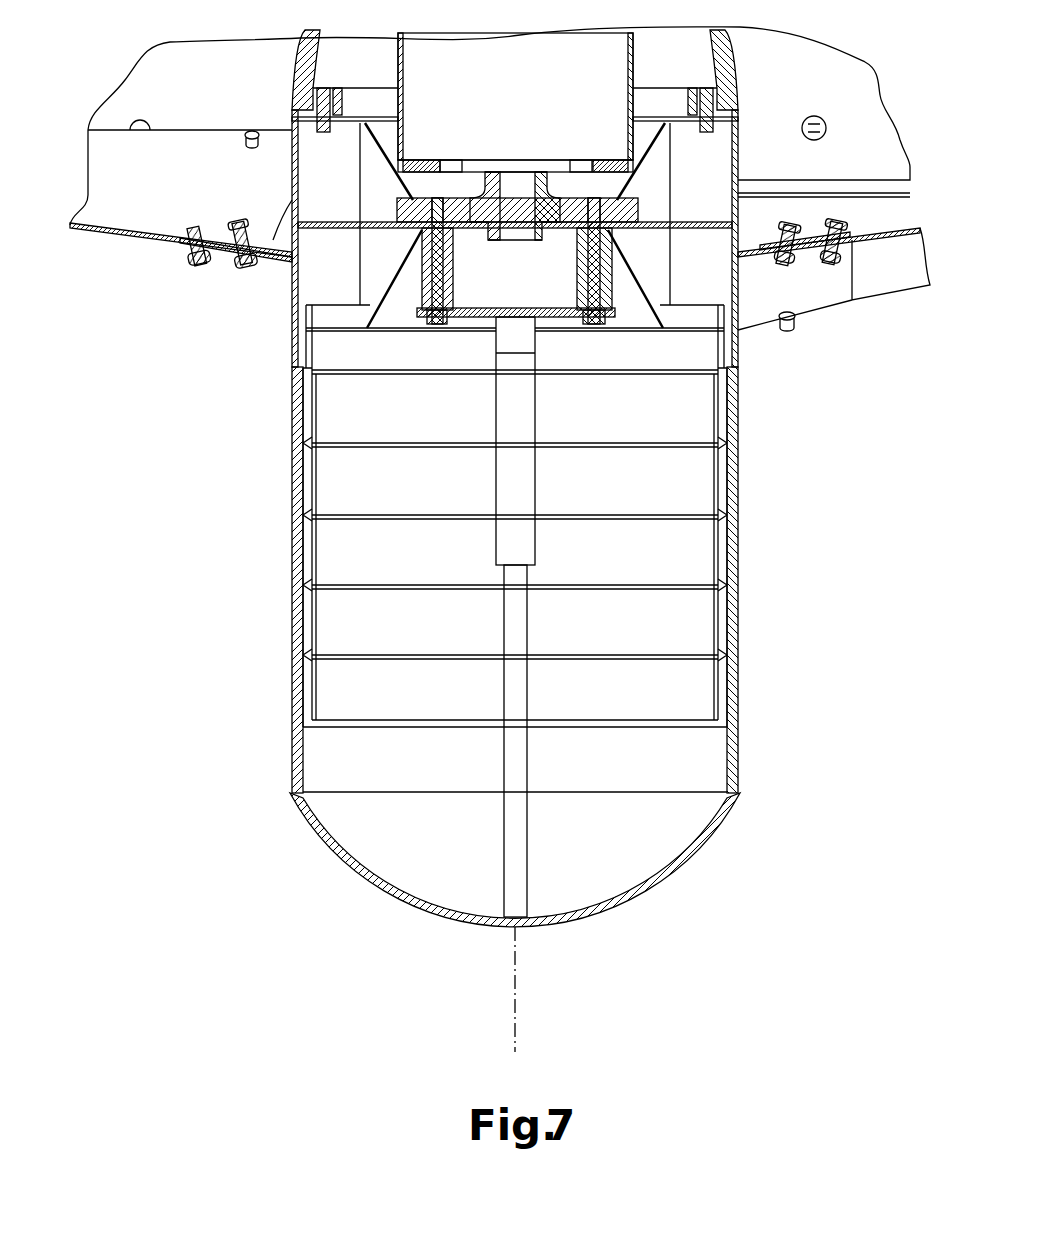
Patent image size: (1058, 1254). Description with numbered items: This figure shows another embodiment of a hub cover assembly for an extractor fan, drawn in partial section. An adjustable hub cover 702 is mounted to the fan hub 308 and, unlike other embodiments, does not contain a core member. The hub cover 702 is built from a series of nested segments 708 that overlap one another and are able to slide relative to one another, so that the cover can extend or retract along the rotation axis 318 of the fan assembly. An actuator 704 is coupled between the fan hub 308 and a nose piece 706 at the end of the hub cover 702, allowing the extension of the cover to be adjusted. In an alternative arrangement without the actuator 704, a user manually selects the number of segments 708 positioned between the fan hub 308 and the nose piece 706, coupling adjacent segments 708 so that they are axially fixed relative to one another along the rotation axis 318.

The adjustable hub cover 702 is at (357, 873).
The actuator 704 is at (525, 470).
The nose piece 706 is at (627, 897).
The nested segments 708 is at (292, 670).
The fan hub 308 is at (613, 268).
The rotation axis 318 is at (515, 1035).